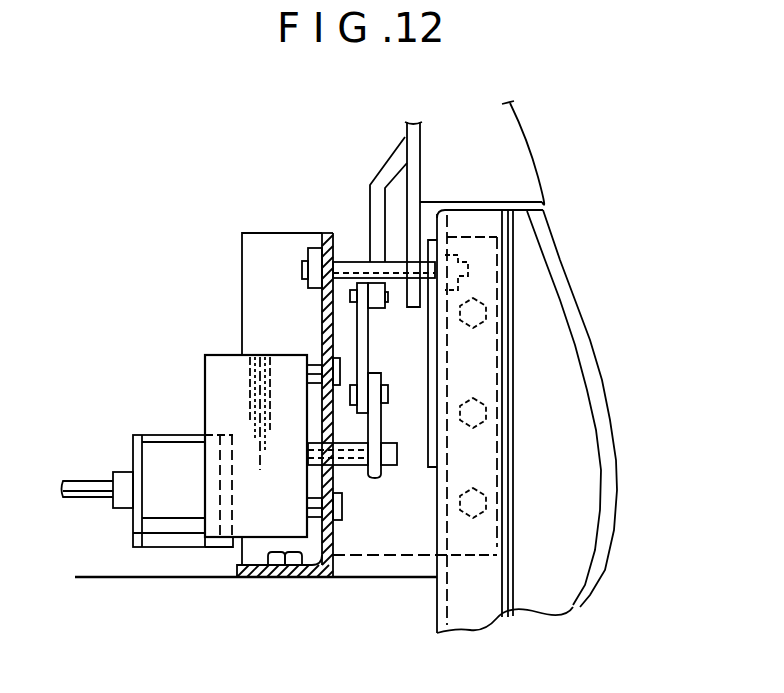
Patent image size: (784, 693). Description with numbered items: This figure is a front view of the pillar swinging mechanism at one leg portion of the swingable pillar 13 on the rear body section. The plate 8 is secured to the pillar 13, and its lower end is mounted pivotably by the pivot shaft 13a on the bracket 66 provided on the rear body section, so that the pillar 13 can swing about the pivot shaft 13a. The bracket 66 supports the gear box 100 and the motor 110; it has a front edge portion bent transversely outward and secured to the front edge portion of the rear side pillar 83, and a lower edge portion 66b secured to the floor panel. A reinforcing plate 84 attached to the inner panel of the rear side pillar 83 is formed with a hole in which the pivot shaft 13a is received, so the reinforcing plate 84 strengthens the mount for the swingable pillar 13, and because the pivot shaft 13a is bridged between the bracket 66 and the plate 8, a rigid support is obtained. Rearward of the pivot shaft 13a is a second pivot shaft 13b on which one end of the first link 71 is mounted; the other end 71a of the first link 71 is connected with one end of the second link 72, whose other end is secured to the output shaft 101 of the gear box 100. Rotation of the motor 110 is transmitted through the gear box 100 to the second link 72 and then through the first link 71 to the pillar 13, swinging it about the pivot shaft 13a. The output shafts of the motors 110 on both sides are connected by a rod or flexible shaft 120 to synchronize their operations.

The plate 8 is at (378, 207).
The pillar 13 is at (510, 152).
The pivot shaft 13a is at (352, 270).
The pivot shaft 13b is at (348, 298).
The bracket 66 is at (327, 333).
The lower edge portion 66b is at (282, 580).
The first link 71 is at (363, 338).
The other end of first link 71a is at (388, 398).
The second link 72 is at (378, 432).
The rear side pillar 83 is at (530, 253).
The reinforcing plate 84 is at (432, 368).
The gear box 100 is at (215, 354).
The output shaft 101 is at (353, 466).
The motor 110 is at (160, 434).
The rod or flexible shaft 120 is at (80, 501).